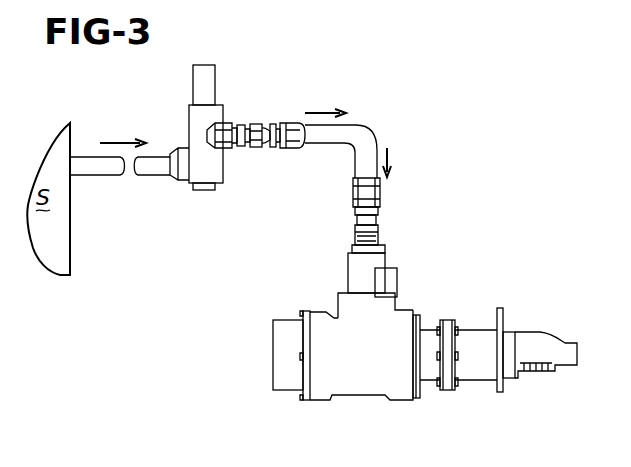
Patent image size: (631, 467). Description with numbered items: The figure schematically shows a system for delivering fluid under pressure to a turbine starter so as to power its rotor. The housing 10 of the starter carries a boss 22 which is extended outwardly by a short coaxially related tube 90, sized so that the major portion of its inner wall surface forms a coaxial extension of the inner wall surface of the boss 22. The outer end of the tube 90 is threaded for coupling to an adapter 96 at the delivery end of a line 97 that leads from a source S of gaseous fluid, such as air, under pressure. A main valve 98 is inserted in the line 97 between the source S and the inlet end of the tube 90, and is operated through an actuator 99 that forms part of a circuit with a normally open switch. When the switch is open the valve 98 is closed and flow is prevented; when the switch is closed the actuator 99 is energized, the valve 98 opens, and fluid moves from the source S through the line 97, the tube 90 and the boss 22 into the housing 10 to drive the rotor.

The housing 10 is at (353, 407).
The boss 22 is at (388, 306).
The tube 90 is at (348, 280).
The adapter 96 is at (352, 253).
The line 97 is at (362, 130).
The main valve 98 is at (214, 118).
The actuator 99 is at (193, 74).